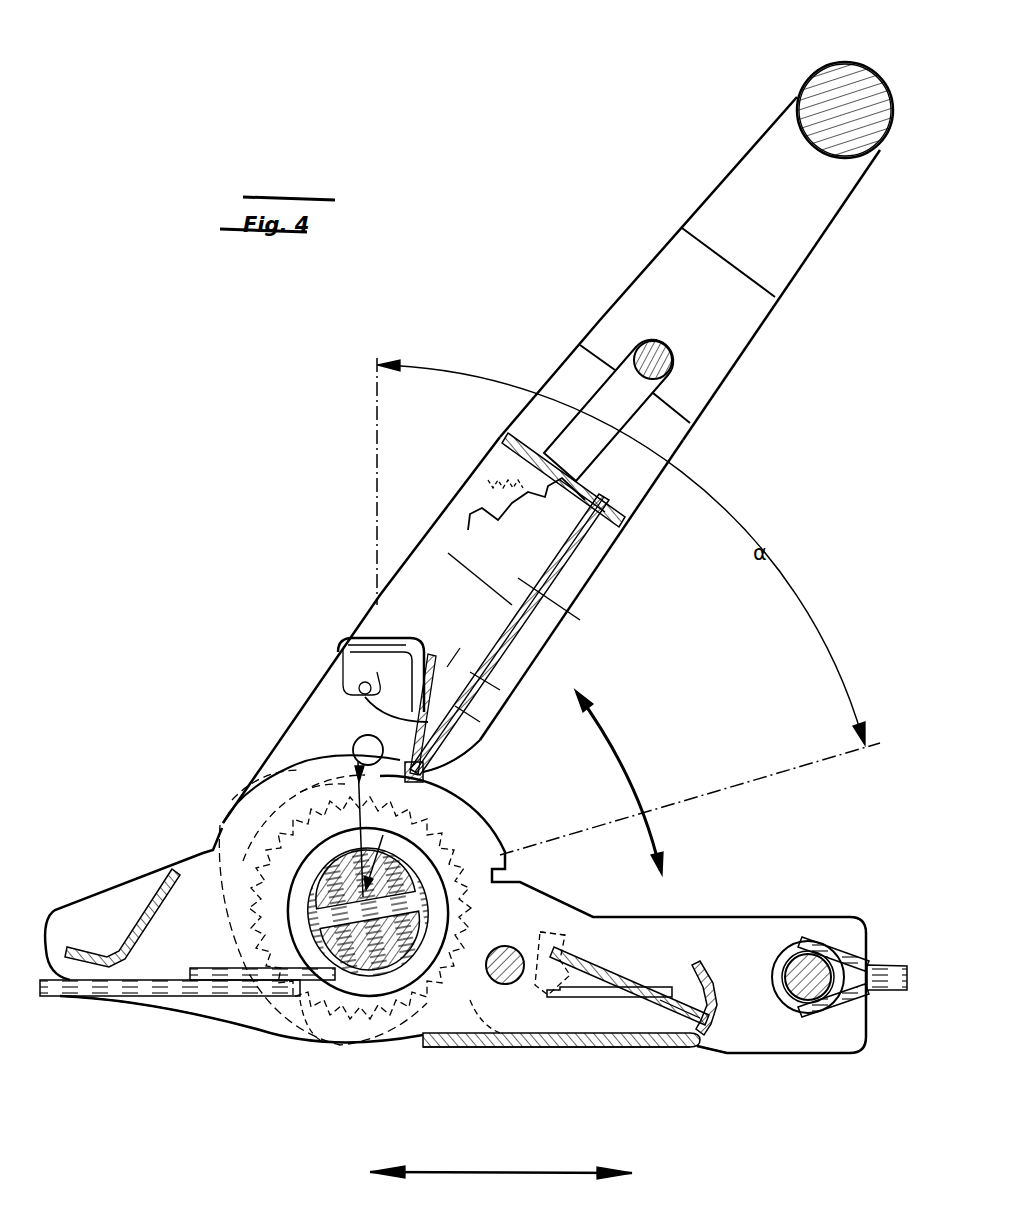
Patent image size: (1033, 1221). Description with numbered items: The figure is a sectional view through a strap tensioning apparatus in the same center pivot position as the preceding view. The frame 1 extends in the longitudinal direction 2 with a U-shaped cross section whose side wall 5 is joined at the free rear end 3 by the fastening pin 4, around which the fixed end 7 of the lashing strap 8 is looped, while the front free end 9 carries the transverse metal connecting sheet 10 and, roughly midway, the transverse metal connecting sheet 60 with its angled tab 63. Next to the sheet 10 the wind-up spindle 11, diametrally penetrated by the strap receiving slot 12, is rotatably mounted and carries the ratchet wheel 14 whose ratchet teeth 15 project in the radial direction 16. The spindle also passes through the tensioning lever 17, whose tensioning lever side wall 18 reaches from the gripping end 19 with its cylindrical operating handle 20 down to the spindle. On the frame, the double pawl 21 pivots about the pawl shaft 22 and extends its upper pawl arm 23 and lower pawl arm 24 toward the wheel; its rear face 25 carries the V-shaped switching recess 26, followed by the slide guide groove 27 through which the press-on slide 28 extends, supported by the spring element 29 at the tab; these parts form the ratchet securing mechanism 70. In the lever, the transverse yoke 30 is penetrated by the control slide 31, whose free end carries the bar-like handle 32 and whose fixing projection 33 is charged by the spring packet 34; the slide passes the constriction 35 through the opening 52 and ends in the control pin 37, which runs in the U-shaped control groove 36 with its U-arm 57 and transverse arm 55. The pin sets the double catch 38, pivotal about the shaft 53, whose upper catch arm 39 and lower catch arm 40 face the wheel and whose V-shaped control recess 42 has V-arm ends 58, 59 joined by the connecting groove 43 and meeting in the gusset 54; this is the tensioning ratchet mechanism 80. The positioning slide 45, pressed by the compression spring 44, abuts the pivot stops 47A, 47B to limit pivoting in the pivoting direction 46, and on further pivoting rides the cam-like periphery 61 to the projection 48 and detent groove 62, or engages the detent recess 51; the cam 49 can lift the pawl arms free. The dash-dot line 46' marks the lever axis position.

The frame 1 is at (727, 912).
The longitudinal direction 2 is at (485, 1170).
The free rear end 3 is at (872, 940).
The fastening pin 4 is at (807, 963).
The side wall 5 is at (193, 1003).
The fixed end 7 is at (805, 1013).
The lashing strap 8 is at (53, 990).
The front free end 9 is at (50, 927).
The transverse metal connecting sheet 10 is at (137, 917).
The wind-up spindle 11 is at (327, 947).
The strap receiving slot 12 is at (307, 913).
The ratchet wheel 14 is at (363, 1047).
The ratchet teeth 15 is at (480, 836).
The radial direction 16 is at (355, 846).
The tensioning lever 17 is at (695, 203).
The tensioning lever side wall 18 is at (545, 659).
The gripping end 19 is at (862, 63).
The operating handle 20 is at (826, 95).
The double pawl 21 is at (540, 1053).
The pawl shaft 22 is at (508, 955).
The upper pawl arm 23 is at (470, 922).
The lower pawl arm 24 is at (498, 1050).
The rear face 25 is at (580, 940).
The switching recess 26 is at (560, 930).
The slide guide groove 27 is at (605, 990).
The press-on slide 28 is at (613, 977).
The spring element 29 is at (690, 1053).
The transverse yoke 30 is at (605, 517).
The control slide 31 is at (598, 408).
The handle 32 is at (645, 354).
The fixing projection 33 is at (470, 518).
The spring packet 34 is at (515, 490).
The constriction 35 is at (545, 611).
The control groove 36 is at (450, 665).
The control pin 37 is at (358, 688).
The double catch 38 is at (323, 743).
The upper catch arm 39 is at (262, 777).
The lower catch arm 40 is at (430, 772).
The control recess 42 is at (343, 647).
The connecting groove 43 is at (380, 650).
The compression spring 44 is at (590, 520).
The positioning slide 45 is at (535, 635).
The pivoting direction 46 is at (619, 778).
The pivot axis line 46' is at (690, 799).
The pivot stop 47A is at (391, 850).
The pivot stop 47B is at (510, 852).
The projection 48 is at (203, 853).
The cam 49 is at (380, 1037).
The detent recess 51 is at (497, 877).
The opening 52 is at (520, 578).
The shaft 53 is at (350, 740).
The gusset 54 is at (477, 743).
The transverse arm 55 is at (433, 655).
The U-arm 57 is at (470, 715).
The V-arm end 58 is at (350, 680).
The V-arm end 59 is at (490, 680).
The transverse metal connecting sheet 60 is at (593, 1047).
The cam-like periphery 61 is at (212, 832).
The detent groove 62 is at (205, 850).
The tab 63 is at (700, 965).
The ratchet securing mechanism 70 is at (462, 980).
The tensioning ratchet mechanism 80 is at (312, 790).